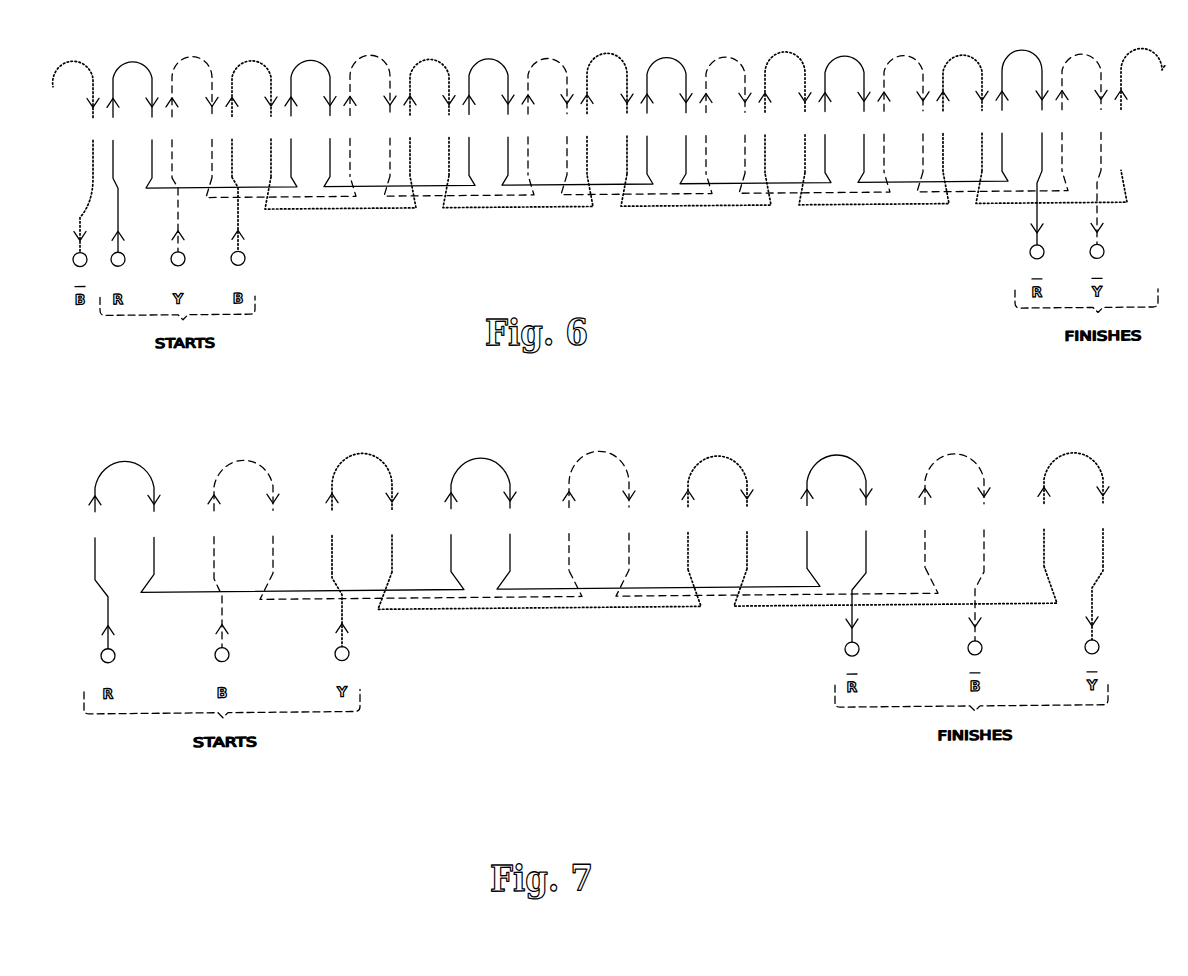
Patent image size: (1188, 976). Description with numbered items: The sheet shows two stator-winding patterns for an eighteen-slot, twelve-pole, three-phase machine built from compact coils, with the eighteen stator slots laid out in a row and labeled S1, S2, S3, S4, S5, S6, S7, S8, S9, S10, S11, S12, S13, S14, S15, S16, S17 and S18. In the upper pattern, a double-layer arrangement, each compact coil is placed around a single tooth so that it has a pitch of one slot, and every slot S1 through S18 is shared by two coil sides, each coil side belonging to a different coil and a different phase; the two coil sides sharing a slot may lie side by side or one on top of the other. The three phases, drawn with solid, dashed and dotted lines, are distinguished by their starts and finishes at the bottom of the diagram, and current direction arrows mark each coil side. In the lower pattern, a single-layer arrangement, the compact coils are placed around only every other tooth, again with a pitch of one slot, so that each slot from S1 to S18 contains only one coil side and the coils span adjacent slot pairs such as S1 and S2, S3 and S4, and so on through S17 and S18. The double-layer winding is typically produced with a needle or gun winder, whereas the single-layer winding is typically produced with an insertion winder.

In FIG. 6, the stator slot S1 is at (103, 128).
In FIG. 7, the stator slot S1 is at (95, 525).
In FIG. 6, the stator slot S2 is at (162, 128).
In FIG. 7, the stator slot S2 is at (154, 524).
In FIG. 6, the stator slot S3 is at (222, 127).
In FIG. 7, the stator slot S3 is at (214, 524).
In FIG. 6, the stator slot S4 is at (281, 127).
In FIG. 7, the stator slot S4 is at (273, 523).
In FIG. 6, the stator slot S5 is at (340, 126).
In FIG. 7, the stator slot S5 is at (332, 523).
In FIG. 6, the stator slot S6 is at (400, 126).
In FIG. 7, the stator slot S6 is at (392, 522).
In FIG. 6, the stator slot S7 is at (459, 125).
In FIG. 7, the stator slot S7 is at (451, 522).
In FIG. 6, the stator slot S8 is at (518, 125).
In FIG. 7, the stator slot S8 is at (510, 521).
In FIG. 6, the stator slot S9 is at (577, 125).
In FIG. 7, the stator slot S9 is at (569, 521).
In FIG. 6, the stator slot S10 is at (637, 124).
In FIG. 7, the stator slot S10 is at (629, 520).
In FIG. 6, the stator slot S11 is at (696, 124).
In FIG. 7, the stator slot S11 is at (688, 519).
In FIG. 6, the stator slot S12 is at (755, 123).
In FIG. 7, the stator slot S12 is at (747, 519).
In FIG. 6, the stator slot S13 is at (815, 123).
In FIG. 7, the stator slot S13 is at (807, 518).
In FIG. 6, the stator slot S14 is at (874, 122).
In FIG. 7, the stator slot S14 is at (866, 518).
In FIG. 6, the stator slot S15 is at (934, 122).
In FIG. 7, the stator slot S15 is at (925, 517).
In FIG. 6, the stator slot S16 is at (993, 121).
In FIG. 7, the stator slot S16 is at (984, 517).
In FIG. 6, the stator slot S17 is at (1052, 121).
In FIG. 7, the stator slot S17 is at (1044, 516).
In FIG. 6, the stator slot S18 is at (1111, 120).
In FIG. 7, the stator slot S18 is at (1103, 516).